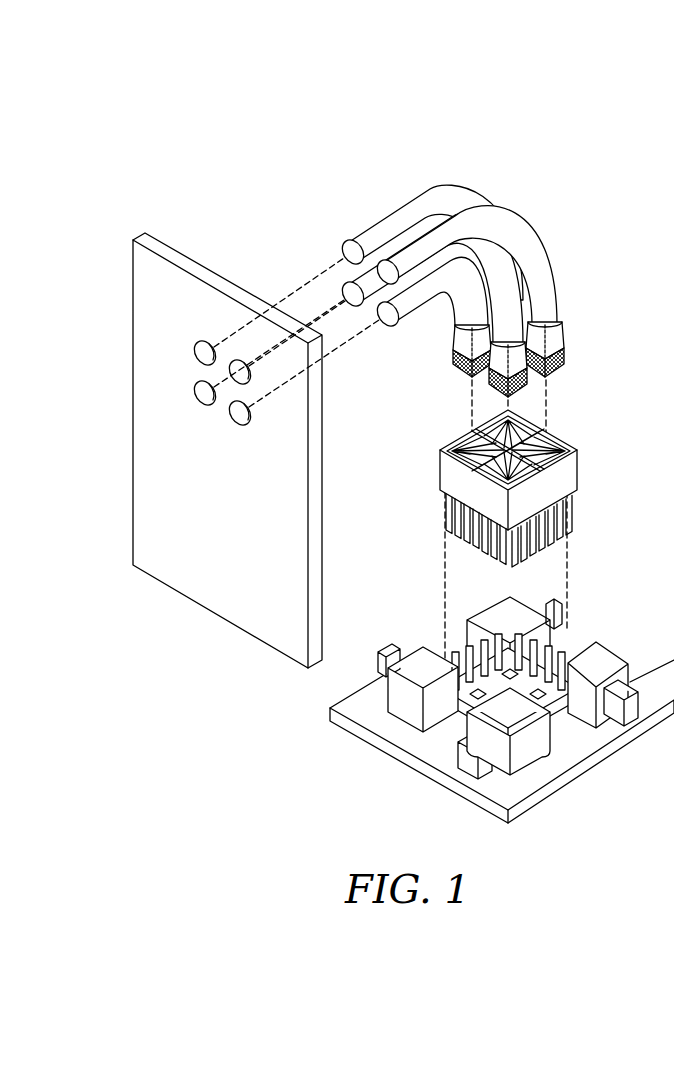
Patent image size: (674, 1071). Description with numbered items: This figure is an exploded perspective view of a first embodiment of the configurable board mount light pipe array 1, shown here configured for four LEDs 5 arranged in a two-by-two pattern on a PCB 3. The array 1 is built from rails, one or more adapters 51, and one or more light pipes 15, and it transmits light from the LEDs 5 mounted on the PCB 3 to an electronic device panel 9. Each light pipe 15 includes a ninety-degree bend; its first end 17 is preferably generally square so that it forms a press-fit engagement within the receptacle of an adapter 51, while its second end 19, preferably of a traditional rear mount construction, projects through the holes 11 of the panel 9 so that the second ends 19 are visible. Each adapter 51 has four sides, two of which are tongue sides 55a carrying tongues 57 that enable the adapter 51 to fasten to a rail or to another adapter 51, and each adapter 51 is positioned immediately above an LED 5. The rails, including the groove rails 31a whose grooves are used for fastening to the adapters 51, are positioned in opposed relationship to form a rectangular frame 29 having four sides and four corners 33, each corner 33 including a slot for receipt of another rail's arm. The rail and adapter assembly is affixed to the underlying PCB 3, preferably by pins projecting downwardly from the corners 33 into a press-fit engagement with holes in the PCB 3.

The configurable board mount light pipe array 1 is at (393, 119).
The PCB 3 is at (590, 742).
The LED 5 is at (474, 695).
The panel 9 is at (256, 450).
The holes 11 is at (251, 412).
The light pipe 15 is at (447, 260).
The first end 17 is at (564, 342).
The second end 19 is at (350, 246).
The frame 29 is at (536, 768).
The groove rail 31a is at (457, 712).
The corner 33 is at (607, 660).
The adapter 51 is at (516, 488).
The tongue side 55a is at (440, 494).
The tongues 57 is at (578, 508).